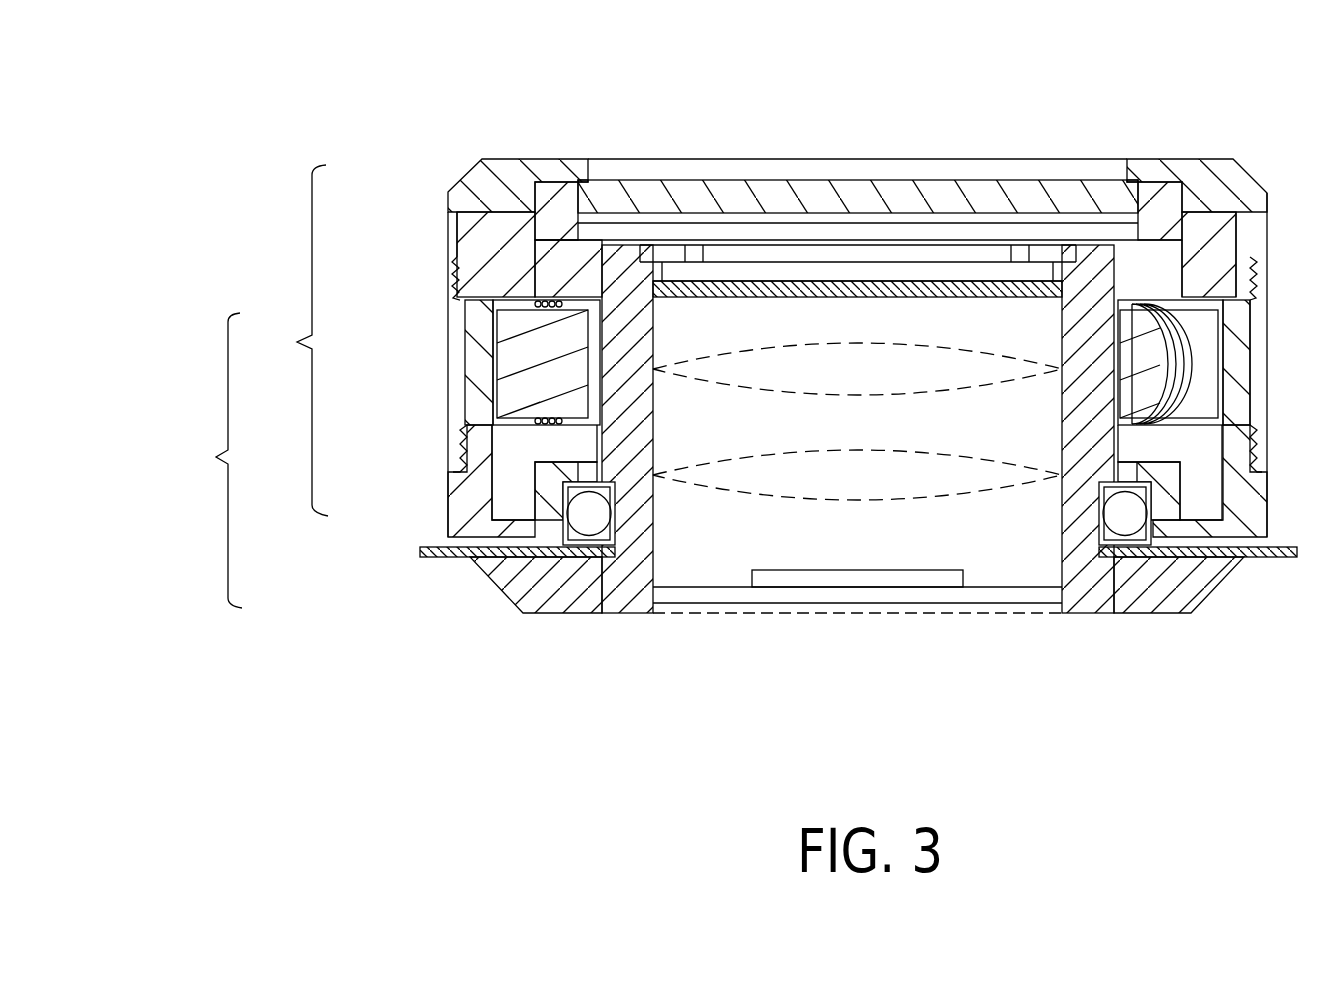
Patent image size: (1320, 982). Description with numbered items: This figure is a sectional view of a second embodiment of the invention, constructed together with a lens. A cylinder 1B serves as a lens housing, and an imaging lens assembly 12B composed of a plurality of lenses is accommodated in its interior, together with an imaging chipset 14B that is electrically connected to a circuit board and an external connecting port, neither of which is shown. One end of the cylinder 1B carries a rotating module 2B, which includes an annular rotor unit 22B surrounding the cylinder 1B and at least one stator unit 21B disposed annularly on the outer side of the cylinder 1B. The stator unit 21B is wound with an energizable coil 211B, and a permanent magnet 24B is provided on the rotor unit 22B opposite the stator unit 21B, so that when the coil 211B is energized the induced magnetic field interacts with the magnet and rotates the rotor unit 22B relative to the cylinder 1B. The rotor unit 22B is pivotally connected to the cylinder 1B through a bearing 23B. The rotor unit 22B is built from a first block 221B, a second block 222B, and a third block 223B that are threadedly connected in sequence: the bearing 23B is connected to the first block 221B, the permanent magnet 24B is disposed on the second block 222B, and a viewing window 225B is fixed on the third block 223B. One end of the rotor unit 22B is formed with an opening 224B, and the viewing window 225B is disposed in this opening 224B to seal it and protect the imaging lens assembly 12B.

The cylinder 1B is at (1100, 265).
The rotating module 2B is at (207, 460).
The stator unit 21B is at (545, 405).
The coil 211B is at (550, 299).
The rotor unit 22B is at (282, 340).
The first block 221B is at (455, 485).
The second block 222B is at (462, 305).
The third block 223B is at (460, 205).
The opening 224B is at (582, 183).
The viewing window 225B is at (857, 180).
The bearing 23B is at (597, 520).
The permanent magnet 24B is at (470, 380).
The imaging lens assembly 12B is at (973, 493).
The imaging chipset 14B is at (965, 578).